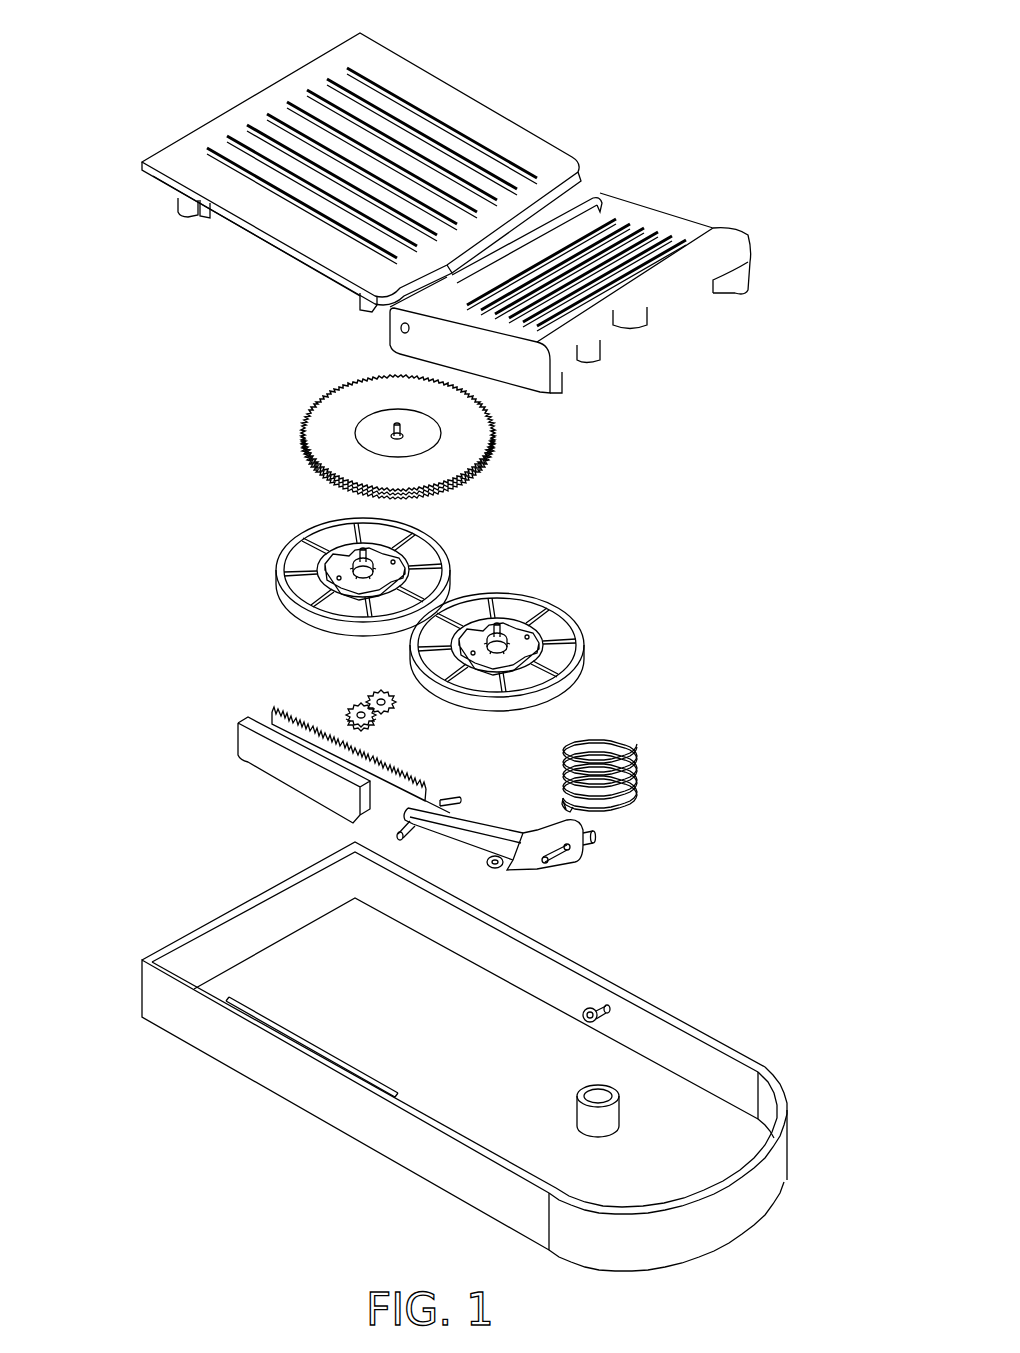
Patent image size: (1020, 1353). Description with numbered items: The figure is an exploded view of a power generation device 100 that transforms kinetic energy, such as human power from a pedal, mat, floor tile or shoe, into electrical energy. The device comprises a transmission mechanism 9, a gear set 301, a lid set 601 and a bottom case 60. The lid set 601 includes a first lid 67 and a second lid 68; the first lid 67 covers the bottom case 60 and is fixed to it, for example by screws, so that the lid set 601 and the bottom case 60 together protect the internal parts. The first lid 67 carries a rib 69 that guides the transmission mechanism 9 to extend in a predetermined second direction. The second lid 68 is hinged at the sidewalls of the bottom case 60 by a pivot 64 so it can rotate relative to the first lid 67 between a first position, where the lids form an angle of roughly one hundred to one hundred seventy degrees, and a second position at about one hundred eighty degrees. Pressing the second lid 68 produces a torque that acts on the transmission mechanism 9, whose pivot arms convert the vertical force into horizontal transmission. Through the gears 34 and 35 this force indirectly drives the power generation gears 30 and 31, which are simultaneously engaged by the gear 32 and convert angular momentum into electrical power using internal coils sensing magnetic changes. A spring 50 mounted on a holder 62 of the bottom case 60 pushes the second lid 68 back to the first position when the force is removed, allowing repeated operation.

The power generation device 100 is at (816, 99).
The lid set 601 is at (135, 38).
The first lid 67 is at (253, 97).
The rib 69 is at (248, 232).
The second lid 68 is at (667, 212).
The gear set 301 is at (273, 375).
The gear 32 is at (497, 428).
The power generation gear 31 is at (433, 533).
The power generation gear 30 is at (590, 650).
The gear 34 is at (373, 697).
The gear 35 is at (372, 727).
The transmission mechanism 9 is at (227, 728).
The spring 50 is at (640, 757).
The bottom case 60 is at (550, 944).
The pivot 64 is at (588, 1010).
The holder 62 is at (602, 1093).